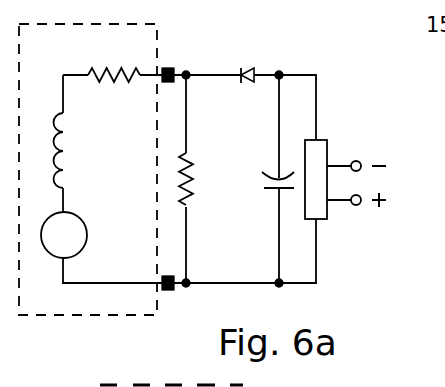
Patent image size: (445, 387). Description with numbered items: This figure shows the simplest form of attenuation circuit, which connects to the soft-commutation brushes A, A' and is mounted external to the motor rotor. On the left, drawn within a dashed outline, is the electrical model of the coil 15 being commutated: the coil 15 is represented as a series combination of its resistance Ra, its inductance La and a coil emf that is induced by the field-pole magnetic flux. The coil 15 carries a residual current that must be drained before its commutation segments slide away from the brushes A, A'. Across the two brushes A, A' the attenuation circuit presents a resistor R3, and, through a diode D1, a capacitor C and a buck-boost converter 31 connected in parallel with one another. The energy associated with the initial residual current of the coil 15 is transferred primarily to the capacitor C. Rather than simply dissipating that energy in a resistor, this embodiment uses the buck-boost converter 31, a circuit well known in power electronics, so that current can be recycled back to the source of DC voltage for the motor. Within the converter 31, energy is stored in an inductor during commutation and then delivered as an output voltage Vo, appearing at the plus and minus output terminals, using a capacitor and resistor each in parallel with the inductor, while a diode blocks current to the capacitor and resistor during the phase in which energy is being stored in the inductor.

The coil 15 is at (87, 316).
The buck-boost converter 31 is at (323, 138).
The soft-commutation brush A is at (178, 53).
The soft-commutation brush A' is at (187, 298).
The coil resistance Ra is at (100, 68).
The coil inductance La is at (74, 143).
The coil emf is at (64, 235).
The diode D1 is at (254, 82).
The resistor R3 is at (195, 184).
The capacitor C is at (274, 190).